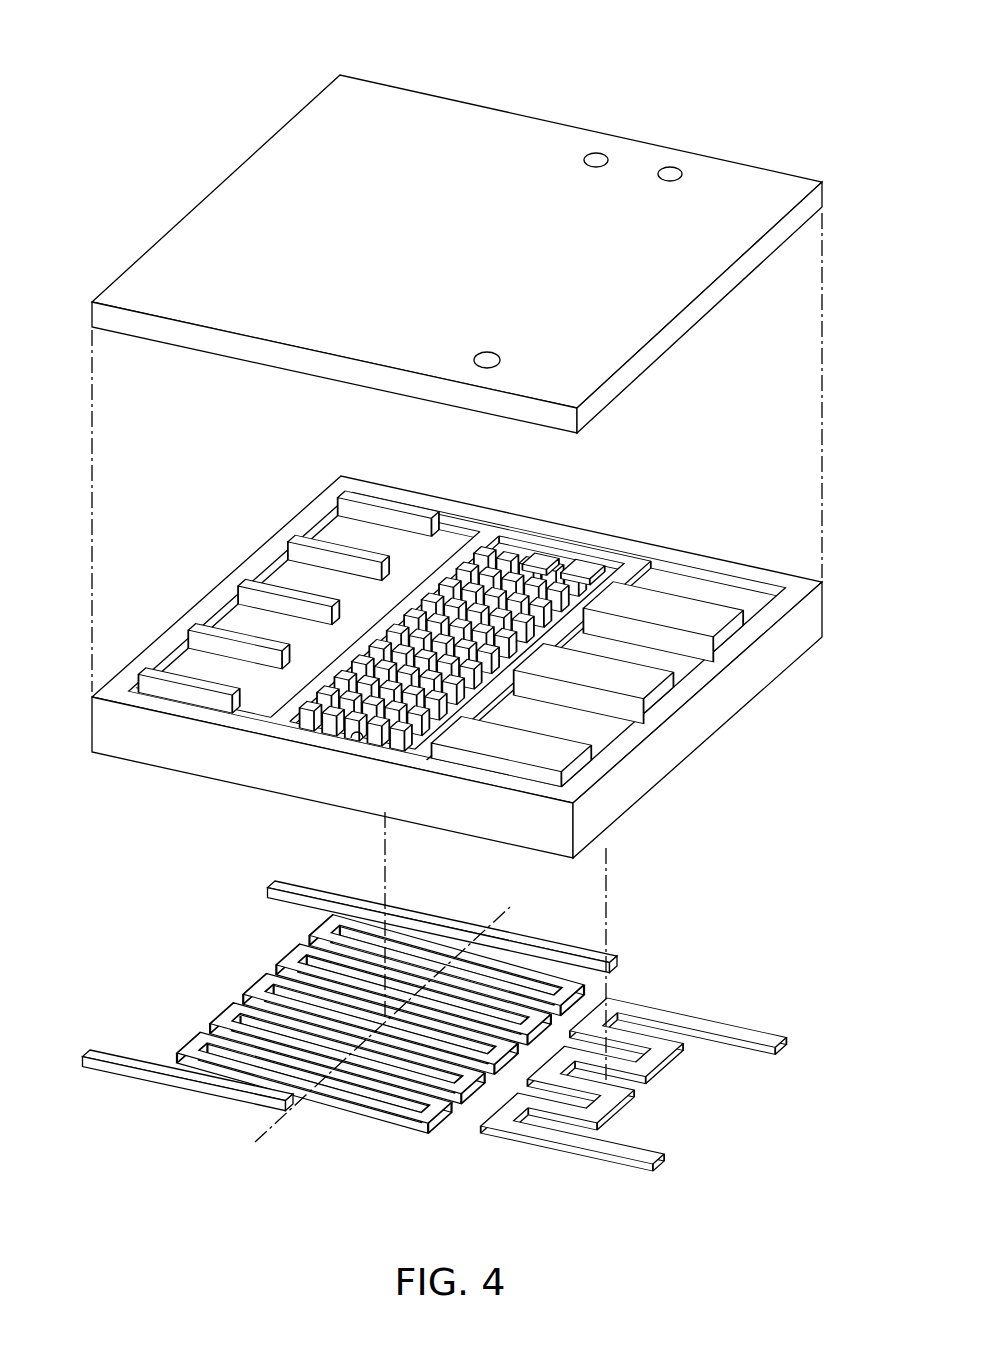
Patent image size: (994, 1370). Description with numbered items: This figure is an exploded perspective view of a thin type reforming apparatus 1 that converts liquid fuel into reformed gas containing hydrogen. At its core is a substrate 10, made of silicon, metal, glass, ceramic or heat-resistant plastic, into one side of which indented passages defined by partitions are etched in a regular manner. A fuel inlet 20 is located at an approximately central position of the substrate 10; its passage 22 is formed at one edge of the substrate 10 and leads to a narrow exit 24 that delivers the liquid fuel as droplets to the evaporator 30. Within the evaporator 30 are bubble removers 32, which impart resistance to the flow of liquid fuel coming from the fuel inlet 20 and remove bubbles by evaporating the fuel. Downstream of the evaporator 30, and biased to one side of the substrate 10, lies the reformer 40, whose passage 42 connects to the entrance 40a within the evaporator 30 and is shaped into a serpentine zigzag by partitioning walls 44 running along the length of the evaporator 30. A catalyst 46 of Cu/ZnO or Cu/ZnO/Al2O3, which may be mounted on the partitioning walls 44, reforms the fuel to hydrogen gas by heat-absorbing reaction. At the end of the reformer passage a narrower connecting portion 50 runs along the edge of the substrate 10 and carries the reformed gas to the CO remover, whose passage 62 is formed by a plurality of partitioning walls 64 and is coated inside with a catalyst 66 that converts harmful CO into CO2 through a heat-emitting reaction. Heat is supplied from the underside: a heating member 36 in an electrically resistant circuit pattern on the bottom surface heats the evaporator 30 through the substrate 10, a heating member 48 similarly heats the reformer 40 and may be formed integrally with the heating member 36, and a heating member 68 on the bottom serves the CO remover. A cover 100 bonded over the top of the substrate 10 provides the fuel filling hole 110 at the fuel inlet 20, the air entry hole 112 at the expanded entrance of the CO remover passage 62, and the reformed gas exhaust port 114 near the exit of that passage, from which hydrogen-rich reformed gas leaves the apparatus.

The thin type reforming apparatus 1 is at (106, 110).
The cover 100 is at (457, 242).
The fuel filling hole 110 is at (596, 153).
The air entry hole 112 is at (487, 356).
The reformed gas exhaust port 114 is at (672, 167).
The substrate 10 is at (736, 700).
The fuel inlet 20 is at (615, 620).
The passage 22 is at (595, 552).
The narrow exit 24 is at (603, 557).
The evaporator 30 is at (432, 638).
The bubble removers 32 is at (505, 530).
The reformer 40 is at (316, 573).
The entrance 40a is at (481, 520).
The passage 42 is at (237, 623).
The partitioning walls 44 is at (278, 576).
The catalyst 46 is at (288, 572).
The connecting portion 50 is at (357, 737).
The passage 62 is at (673, 680).
The partitioning walls 64 is at (663, 622).
The catalyst 66 is at (652, 604).
The heating member 36 is at (350, 1043).
The heating member 48 is at (210, 1089).
The heating member 68 is at (567, 1150).